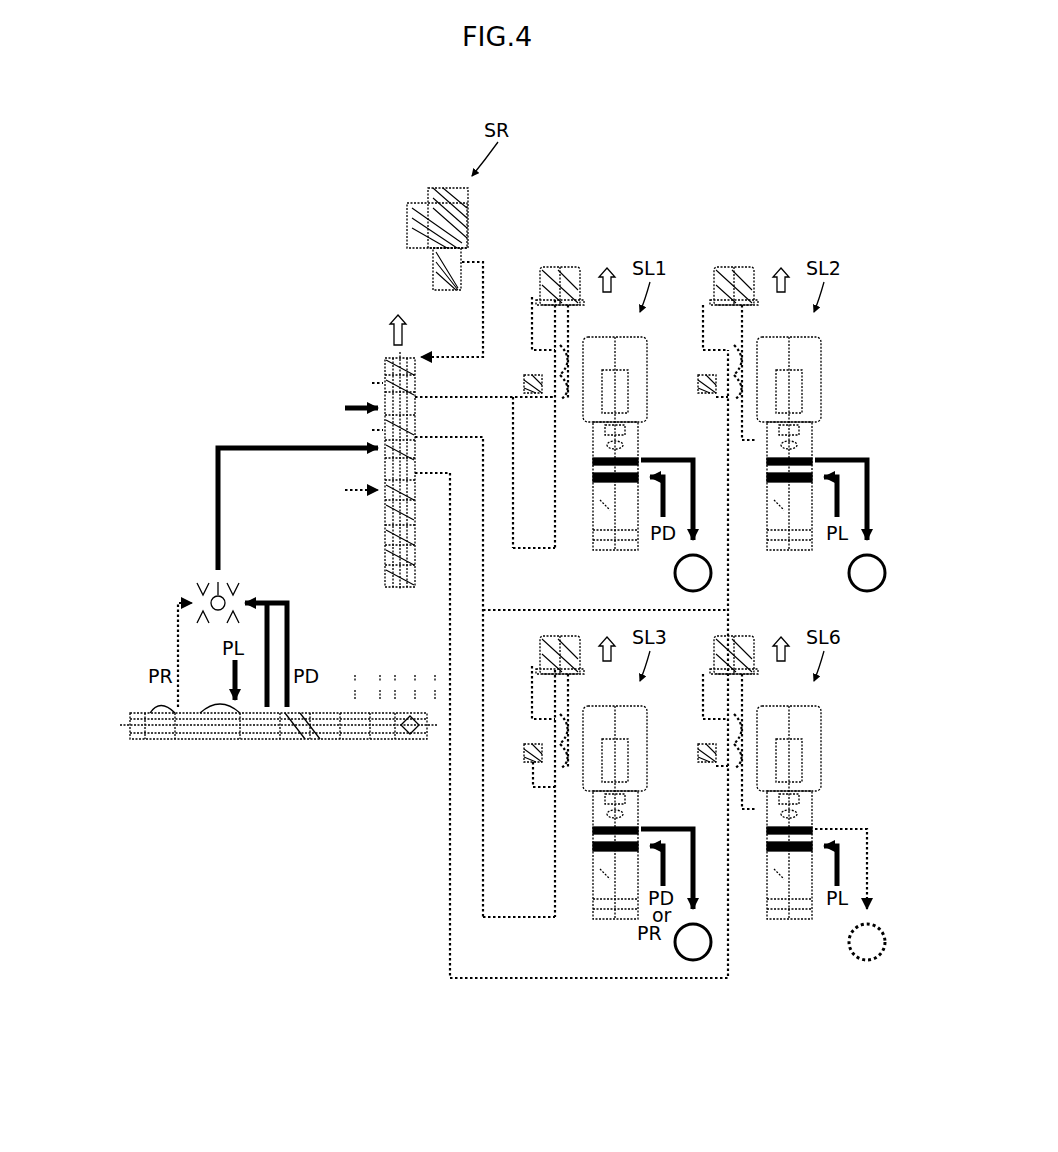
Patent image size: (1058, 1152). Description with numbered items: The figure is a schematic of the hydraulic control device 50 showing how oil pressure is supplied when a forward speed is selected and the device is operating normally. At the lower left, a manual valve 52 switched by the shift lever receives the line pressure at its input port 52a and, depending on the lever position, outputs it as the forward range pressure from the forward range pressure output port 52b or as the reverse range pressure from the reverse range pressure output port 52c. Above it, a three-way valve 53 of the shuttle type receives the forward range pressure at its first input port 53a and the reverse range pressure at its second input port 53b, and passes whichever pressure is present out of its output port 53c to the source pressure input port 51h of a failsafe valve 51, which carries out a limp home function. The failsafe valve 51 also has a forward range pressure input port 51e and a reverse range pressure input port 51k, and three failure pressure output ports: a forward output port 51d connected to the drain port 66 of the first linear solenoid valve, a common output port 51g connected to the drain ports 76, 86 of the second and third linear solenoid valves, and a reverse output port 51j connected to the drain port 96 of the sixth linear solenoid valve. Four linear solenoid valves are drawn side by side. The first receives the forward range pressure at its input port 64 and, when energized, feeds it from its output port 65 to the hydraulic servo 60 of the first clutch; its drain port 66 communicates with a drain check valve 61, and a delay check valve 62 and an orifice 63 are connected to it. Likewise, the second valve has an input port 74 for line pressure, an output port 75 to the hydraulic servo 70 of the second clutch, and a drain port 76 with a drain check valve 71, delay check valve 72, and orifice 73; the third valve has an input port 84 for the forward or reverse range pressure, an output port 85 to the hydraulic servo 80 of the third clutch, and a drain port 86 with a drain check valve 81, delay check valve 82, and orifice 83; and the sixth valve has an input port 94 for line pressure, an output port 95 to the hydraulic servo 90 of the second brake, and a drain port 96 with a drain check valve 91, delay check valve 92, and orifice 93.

The hydraulic control device 50 is at (730, 150).
The failsafe valve 51 is at (355, 350).
The forward output port 51d is at (418, 390).
The forward range pressure input port 51e is at (355, 383).
The common output port 51g is at (418, 433).
The source pressure input port 51h is at (355, 437).
The reverse output port 51j is at (418, 473).
The reverse range pressure input port 51k is at (383, 495).
The manual valve 52 is at (250, 785).
The input port 52a is at (212, 740).
The forward range pressure output port 52b is at (292, 740).
The reverse range pressure output port 52c is at (155, 740).
The three-way valve 53 is at (190, 555).
The first input port 53a is at (242, 593).
The second input port 53b is at (192, 595).
The output port 53c is at (222, 580).
The hydraulic servo 60 is at (675, 573).
The drain check valve 61 is at (553, 268).
The delay check valve 62 is at (527, 375).
The orifice 63 is at (570, 348).
The input port 64 is at (652, 488).
The output port 65 is at (645, 458).
The drain port 66 is at (593, 468).
The hydraulic servo 70 is at (849, 573).
The drain check valve 71 is at (731, 268).
The delay check valve 72 is at (703, 375).
The orifice 73 is at (744, 348).
The input port 74 is at (826, 488).
The output port 75 is at (819, 458).
The drain port 76 is at (767, 468).
The hydraulic servo 80 is at (675, 950).
The drain check valve 81 is at (548, 637).
The delay check valve 82 is at (527, 744).
The orifice 83 is at (570, 717).
The input port 84 is at (652, 857).
The output port 85 is at (645, 827).
The drain port 86 is at (593, 837).
The hydraulic servo 90 is at (849, 942).
The drain check valve 91 is at (735, 637).
The delay check valve 92 is at (703, 744).
The orifice 93 is at (744, 717).
The input port 94 is at (826, 857).
The output port 95 is at (819, 827).
The drain port 96 is at (767, 837).